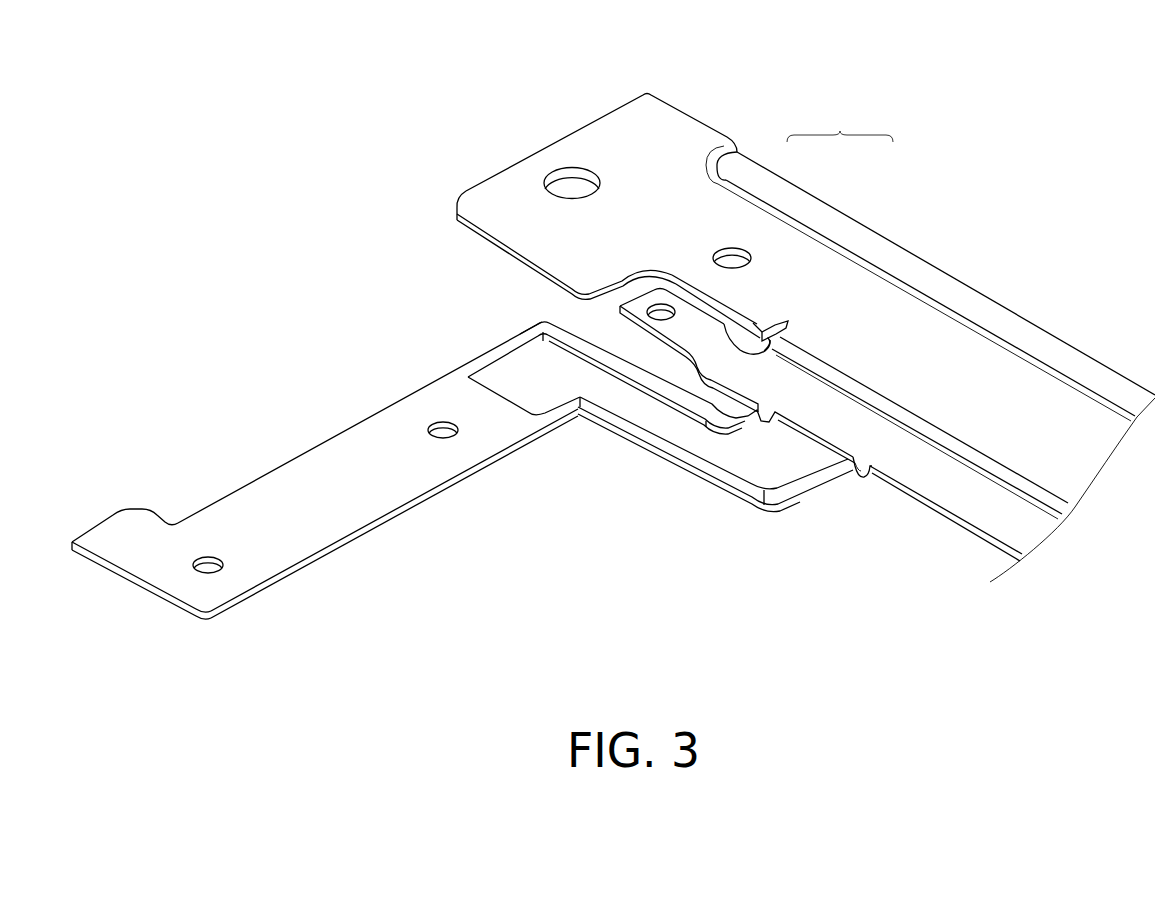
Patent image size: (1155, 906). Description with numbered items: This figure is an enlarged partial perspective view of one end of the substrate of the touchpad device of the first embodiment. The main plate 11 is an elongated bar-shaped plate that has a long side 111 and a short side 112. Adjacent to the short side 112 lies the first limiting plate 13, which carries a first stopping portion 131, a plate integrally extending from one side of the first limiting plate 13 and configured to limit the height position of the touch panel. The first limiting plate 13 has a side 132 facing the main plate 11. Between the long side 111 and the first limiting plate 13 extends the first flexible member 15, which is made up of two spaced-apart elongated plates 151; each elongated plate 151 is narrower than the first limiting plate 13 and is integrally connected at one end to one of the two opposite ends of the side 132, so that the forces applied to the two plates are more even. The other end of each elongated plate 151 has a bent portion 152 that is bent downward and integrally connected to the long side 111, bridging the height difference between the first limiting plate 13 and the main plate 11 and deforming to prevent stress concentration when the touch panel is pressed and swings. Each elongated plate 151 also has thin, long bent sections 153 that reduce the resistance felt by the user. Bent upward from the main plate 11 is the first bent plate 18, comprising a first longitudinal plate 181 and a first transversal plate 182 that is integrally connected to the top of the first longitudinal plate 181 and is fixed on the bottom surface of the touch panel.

The main plate 11 is at (1013, 393).
The long side 111 is at (985, 549).
The short side 112 is at (551, 148).
The first limiting plate 13 is at (532, 444).
The first stopping portion 131 is at (117, 533).
The side 132 is at (503, 405).
The first flexible member 15 is at (727, 436).
The elongated plate 151 is at (510, 340).
The bent portion 152 is at (861, 476).
The bent section 153 is at (583, 418).
The first bent plate 18 is at (759, 254).
The first longitudinal plate 181 is at (766, 322).
The first transversal plate 182 is at (690, 328).